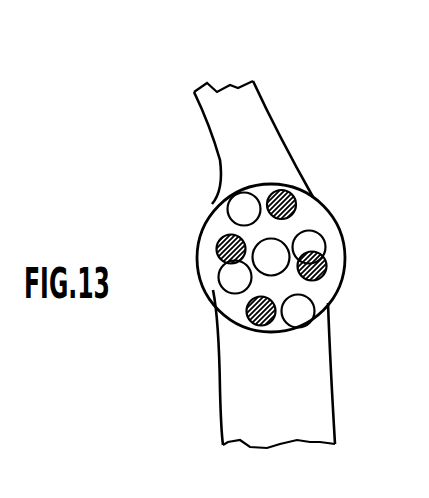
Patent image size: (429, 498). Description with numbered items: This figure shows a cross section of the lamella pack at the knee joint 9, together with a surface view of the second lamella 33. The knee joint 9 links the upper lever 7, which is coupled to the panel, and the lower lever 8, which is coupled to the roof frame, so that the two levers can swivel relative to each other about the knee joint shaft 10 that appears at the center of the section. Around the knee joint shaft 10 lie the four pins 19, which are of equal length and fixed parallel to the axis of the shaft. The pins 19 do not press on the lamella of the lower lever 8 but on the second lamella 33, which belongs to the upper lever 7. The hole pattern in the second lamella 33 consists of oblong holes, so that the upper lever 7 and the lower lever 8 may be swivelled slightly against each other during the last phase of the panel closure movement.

The upper lever 7 is at (258, 130).
The lower lever 8 is at (313, 382).
The knee joint 9 is at (300, 257).
The knee joint shaft 10 is at (271, 265).
The pins 19 is at (295, 201).
The second lamella 33 is at (337, 225).